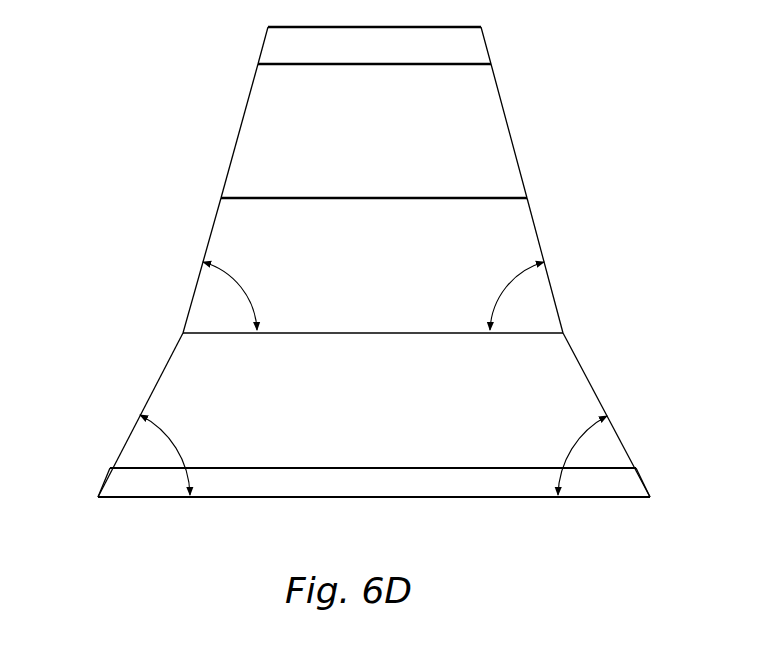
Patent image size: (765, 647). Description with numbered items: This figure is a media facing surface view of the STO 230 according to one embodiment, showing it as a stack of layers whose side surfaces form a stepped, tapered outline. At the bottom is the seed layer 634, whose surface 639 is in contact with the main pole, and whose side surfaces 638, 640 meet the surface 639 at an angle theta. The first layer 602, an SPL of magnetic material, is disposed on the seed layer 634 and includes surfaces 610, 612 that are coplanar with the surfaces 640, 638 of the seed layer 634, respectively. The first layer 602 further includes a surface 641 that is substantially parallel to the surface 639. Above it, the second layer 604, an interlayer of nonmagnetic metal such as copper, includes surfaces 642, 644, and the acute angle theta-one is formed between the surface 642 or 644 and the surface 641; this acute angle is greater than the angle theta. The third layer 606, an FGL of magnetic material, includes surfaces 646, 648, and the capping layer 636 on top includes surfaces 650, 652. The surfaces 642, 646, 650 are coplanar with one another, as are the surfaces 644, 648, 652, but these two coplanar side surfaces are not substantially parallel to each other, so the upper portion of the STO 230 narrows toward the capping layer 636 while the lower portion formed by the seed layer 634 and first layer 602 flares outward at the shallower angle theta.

The STO 230 is at (98, 76).
The surface 650 is at (484, 31).
The surface 652 is at (262, 44).
The capping layer 636 is at (473, 50).
The surface 646 is at (505, 103).
The surface 648 is at (241, 124).
The third layer 606 is at (500, 155).
The surface 644 is at (212, 224).
The surface 642 is at (540, 241).
The second layer 604 is at (537, 281).
The surface 641 is at (365, 334).
The surface 610 is at (583, 363).
The surface 612 is at (147, 394).
The first layer 602 is at (590, 402).
The surface 638 is at (102, 477).
The surface 639 is at (363, 498).
The seed layer 634 is at (518, 484).
The surface 640 is at (643, 482).